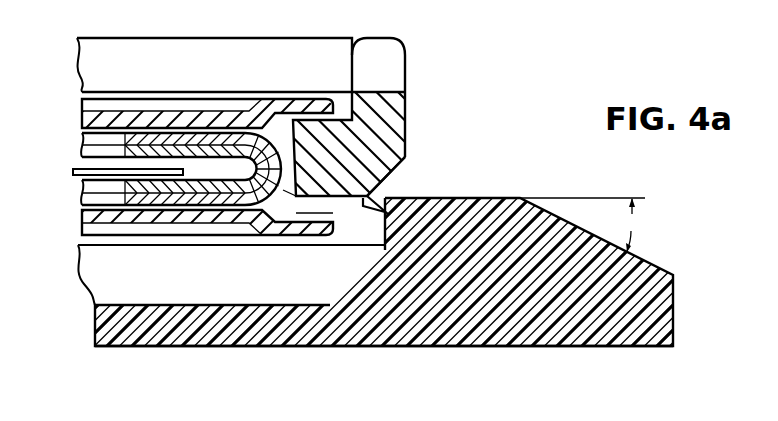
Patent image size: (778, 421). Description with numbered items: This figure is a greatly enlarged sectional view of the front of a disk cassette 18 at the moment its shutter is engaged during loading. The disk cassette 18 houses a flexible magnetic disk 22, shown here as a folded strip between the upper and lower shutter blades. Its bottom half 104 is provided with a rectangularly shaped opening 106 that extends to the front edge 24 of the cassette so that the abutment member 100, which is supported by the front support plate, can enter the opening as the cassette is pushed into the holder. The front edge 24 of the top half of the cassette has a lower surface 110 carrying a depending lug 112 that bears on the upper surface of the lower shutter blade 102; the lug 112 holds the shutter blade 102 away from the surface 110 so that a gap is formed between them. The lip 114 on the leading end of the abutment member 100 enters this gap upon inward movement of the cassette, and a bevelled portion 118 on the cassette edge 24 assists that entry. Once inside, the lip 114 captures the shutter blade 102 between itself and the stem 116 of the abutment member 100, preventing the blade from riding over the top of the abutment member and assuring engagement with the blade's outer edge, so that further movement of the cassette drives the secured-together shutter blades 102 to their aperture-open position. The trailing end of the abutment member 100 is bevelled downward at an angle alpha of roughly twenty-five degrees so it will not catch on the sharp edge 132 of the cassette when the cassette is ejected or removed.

The disk cassette 18 is at (265, 38).
The front edge 24 is at (405, 118).
The shutter blade 102 is at (82, 117).
The flexible magnetic disk 22 is at (73, 172).
The abutment member 100 is at (498, 197).
The bottom half 104 is at (143, 292).
The rectangularly shaped opening 106 is at (88, 262).
The bevelled portion 118 is at (399, 163).
The lip 114 is at (385, 200).
The stem 116 is at (372, 213).
The sharp edge 132 is at (283, 190).
The depending lug 112 is at (302, 213).
The lower surface 110 is at (318, 225).